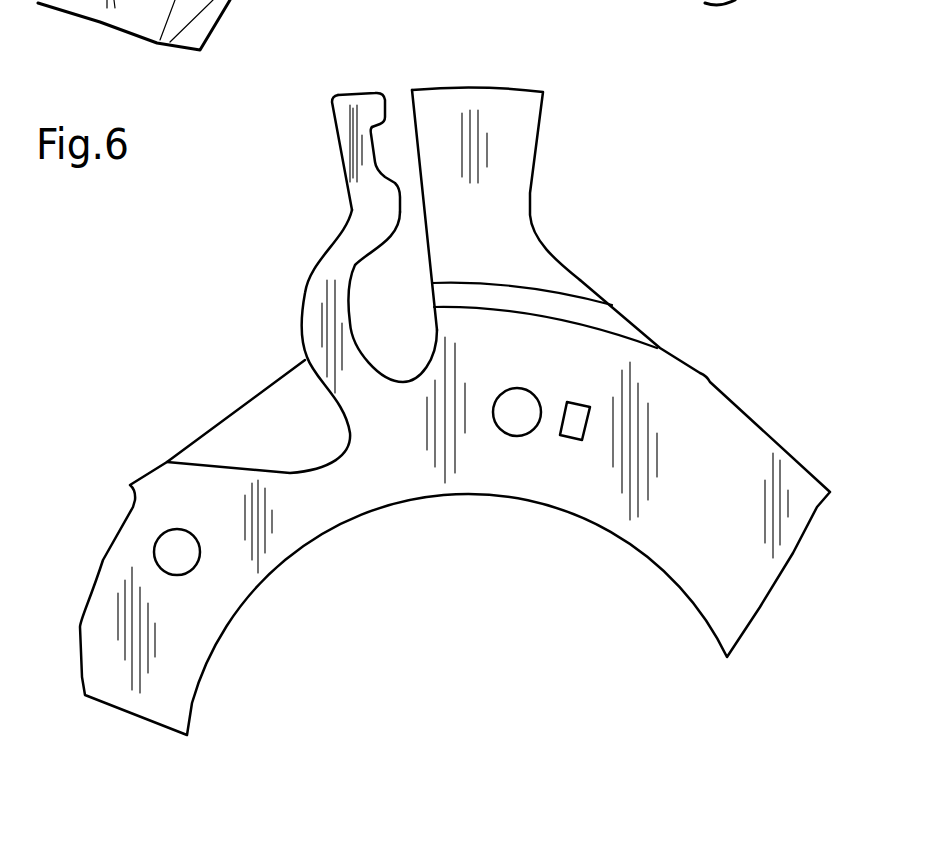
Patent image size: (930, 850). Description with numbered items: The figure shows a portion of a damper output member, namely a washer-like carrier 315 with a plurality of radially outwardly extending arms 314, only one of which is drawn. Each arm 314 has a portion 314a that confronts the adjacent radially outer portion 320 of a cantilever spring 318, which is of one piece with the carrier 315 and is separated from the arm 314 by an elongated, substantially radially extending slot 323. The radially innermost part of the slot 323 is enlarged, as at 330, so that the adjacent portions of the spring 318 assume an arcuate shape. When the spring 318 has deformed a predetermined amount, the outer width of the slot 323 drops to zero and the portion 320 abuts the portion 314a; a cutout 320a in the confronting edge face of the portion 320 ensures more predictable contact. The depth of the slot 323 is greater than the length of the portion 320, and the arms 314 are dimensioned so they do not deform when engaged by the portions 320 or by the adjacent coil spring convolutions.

The arm 314 is at (513, 130).
The portion of arm 314a is at (458, 132).
The carrier 315 is at (703, 398).
The cantilever spring 318 is at (333, 289).
The radially outer portion of spring 320 is at (363, 192).
The cutout 320a is at (383, 148).
The slot 323 is at (392, 108).
The enlarged radially innermost portion of slot 330 is at (390, 270).